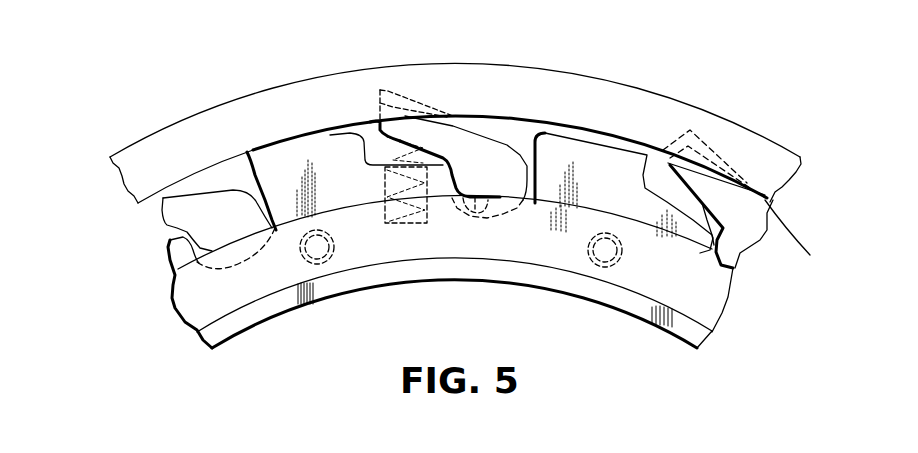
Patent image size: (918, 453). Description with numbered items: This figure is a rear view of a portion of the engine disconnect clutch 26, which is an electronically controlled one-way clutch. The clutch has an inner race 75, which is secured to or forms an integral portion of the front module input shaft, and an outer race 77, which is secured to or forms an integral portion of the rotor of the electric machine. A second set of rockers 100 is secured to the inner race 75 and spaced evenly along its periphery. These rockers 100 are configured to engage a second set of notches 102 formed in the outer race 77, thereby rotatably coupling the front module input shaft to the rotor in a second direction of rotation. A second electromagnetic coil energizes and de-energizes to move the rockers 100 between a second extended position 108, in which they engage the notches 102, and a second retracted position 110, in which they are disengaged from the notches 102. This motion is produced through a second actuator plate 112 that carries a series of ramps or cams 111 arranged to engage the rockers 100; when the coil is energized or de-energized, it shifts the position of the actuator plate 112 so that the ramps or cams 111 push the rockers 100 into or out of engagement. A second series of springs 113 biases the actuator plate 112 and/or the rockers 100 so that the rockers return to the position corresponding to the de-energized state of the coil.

The engine disconnect clutch 26 is at (112, 304).
The inner race 75 is at (598, 143).
The outer race 77 is at (741, 207).
The second set of rockers 100 is at (486, 114).
The second set of notches 102 is at (385, 90).
The second extended position 108 is at (370, 123).
The second retracted position 110 is at (350, 150).
The ramps or cams 111 is at (483, 222).
The second actuator plate 112 is at (677, 337).
The second series of springs 113 is at (318, 265).